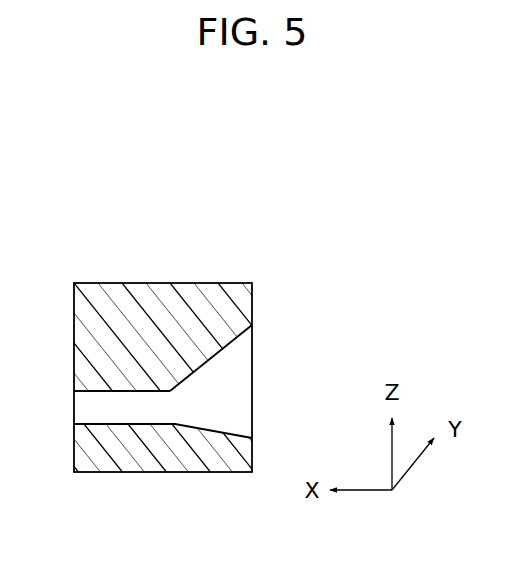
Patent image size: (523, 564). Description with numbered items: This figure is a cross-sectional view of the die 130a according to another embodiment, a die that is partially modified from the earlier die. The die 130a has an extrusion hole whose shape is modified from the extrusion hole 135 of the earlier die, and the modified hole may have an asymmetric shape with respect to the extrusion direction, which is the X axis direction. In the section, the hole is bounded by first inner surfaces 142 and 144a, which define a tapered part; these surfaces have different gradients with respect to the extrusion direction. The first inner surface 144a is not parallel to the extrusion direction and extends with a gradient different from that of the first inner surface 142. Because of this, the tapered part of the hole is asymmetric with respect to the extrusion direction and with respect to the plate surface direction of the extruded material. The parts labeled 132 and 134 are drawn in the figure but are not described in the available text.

The die 130a is at (250, 258).
The extrusion hole 135 is at (53, 216).
The first surface 132 is at (113, 388).
The inclined surface 134 is at (211, 356).
The first inner surface 142 is at (188, 382).
The first inner surface 144a is at (234, 437).